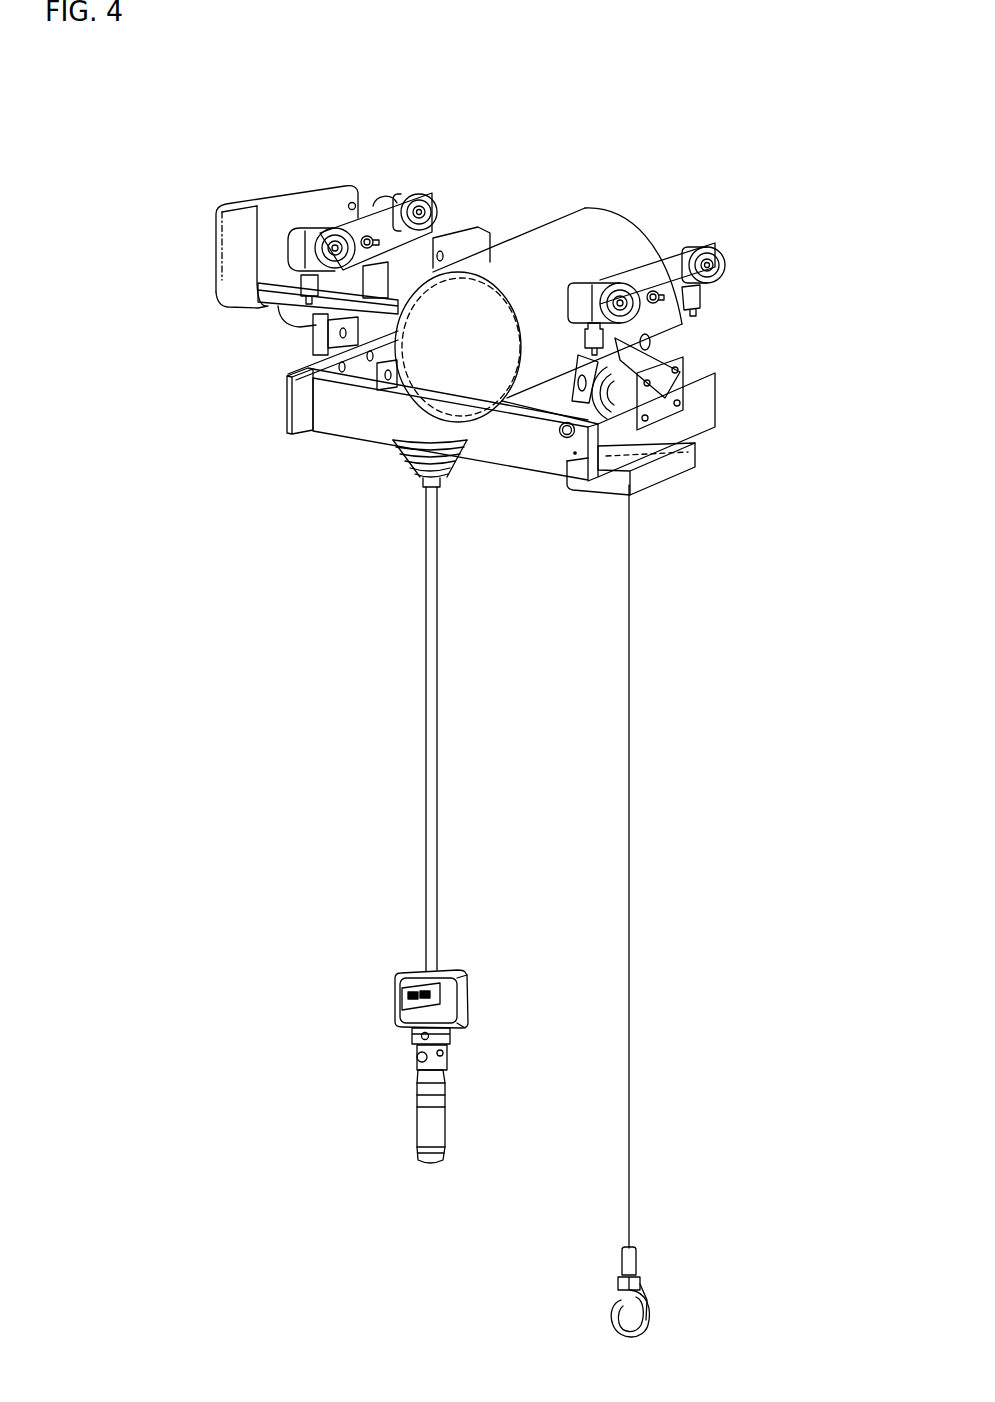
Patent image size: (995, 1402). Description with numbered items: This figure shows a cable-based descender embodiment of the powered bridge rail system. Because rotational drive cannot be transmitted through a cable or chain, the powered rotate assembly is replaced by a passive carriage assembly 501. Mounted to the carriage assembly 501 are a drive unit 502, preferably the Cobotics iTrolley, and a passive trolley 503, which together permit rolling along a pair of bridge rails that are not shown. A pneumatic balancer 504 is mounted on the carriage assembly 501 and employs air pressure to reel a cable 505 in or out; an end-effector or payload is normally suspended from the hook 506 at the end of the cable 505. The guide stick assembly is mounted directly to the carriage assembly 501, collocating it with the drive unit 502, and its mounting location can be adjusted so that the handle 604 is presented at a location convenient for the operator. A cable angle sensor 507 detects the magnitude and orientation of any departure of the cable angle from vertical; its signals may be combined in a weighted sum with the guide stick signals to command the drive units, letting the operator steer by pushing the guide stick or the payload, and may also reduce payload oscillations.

The passive carriage assembly 501 is at (332, 404).
The drive unit 502 is at (322, 203).
The passive trolley 503 is at (722, 246).
The pneumatic balancer 504 is at (540, 240).
The cable 505 is at (645, 918).
The hook 506 is at (657, 1293).
The cable angle sensor 507 is at (706, 456).
The handle 604 is at (413, 1110).